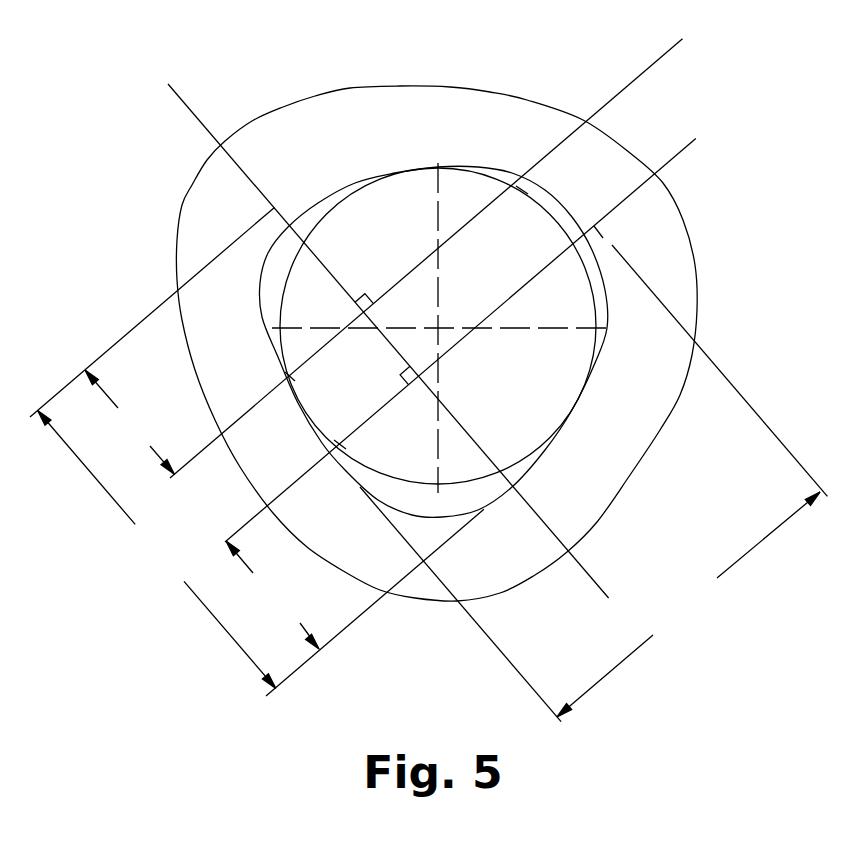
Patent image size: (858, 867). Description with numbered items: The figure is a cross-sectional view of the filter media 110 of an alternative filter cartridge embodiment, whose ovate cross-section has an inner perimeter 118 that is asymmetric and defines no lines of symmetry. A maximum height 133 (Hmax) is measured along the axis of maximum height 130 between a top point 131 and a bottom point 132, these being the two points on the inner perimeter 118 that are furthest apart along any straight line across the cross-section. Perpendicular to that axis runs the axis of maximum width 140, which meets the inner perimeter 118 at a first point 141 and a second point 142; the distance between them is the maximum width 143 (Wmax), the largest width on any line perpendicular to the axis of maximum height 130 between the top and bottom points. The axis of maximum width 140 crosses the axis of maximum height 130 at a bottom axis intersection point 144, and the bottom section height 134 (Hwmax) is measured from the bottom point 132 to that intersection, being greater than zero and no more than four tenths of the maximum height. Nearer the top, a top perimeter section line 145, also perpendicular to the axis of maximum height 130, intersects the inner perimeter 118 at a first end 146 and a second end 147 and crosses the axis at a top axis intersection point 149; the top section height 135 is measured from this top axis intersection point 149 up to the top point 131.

The filter media 110 is at (773, 181).
The inner perimeter 118 is at (368, 176).
The axis of maximum height 130 is at (185, 102).
The top point 131 is at (275, 208).
The bottom point 132 is at (508, 484).
The maximum height 133 is at (261, 554).
The bottom section height 134 is at (272, 595).
The top section height 135 is at (129, 422).
The axis of maximum width 140 is at (677, 157).
The first point 141 is at (340, 445).
The second point 142 is at (598, 232).
The maximum width 143 is at (593, 483).
The bottom axis intersection point 144 is at (422, 381).
The top perimeter section line 145 is at (622, 92).
The first end 146 is at (290, 377).
The second end 147 is at (522, 190).
The top axis intersection point 149 is at (368, 316).